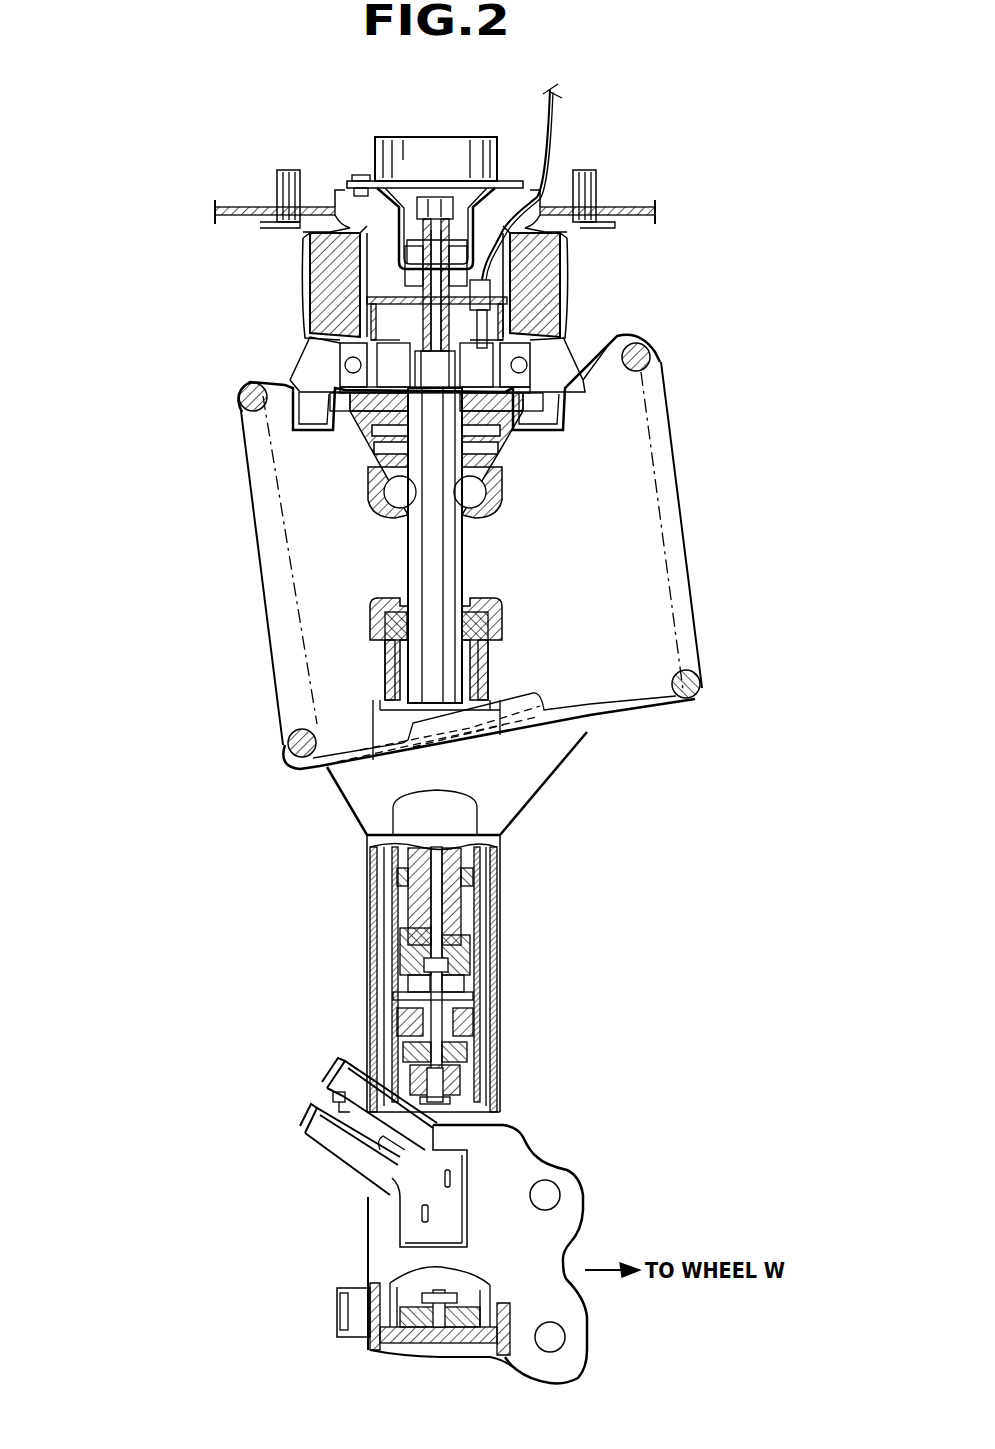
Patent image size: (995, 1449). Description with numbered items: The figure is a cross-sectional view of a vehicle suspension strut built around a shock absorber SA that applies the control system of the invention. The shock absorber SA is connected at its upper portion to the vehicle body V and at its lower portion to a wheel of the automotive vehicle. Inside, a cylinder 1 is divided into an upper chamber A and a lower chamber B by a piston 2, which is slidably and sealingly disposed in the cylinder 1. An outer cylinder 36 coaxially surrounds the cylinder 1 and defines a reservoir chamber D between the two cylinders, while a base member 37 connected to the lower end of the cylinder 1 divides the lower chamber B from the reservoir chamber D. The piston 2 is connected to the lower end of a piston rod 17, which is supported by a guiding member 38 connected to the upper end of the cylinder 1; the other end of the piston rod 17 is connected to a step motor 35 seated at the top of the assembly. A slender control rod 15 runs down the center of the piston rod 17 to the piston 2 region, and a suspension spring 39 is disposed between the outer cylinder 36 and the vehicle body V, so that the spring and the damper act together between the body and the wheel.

The step motor 35 is at (432, 140).
The vehicle body V is at (640, 212).
The piston rod 17 is at (440, 556).
The shock absorber SA is at (225, 538).
The suspension spring 39 is at (268, 628).
The guiding member 38 is at (488, 665).
The outer cylinder 36 is at (372, 866).
The cylinder 1 is at (475, 875).
The control rod 15 is at (433, 898).
The upper chamber A is at (470, 963).
The piston 2 is at (395, 1017).
The reservoir chamber D is at (483, 998).
The lower chamber B is at (468, 1080).
The base member 37 is at (392, 1318).